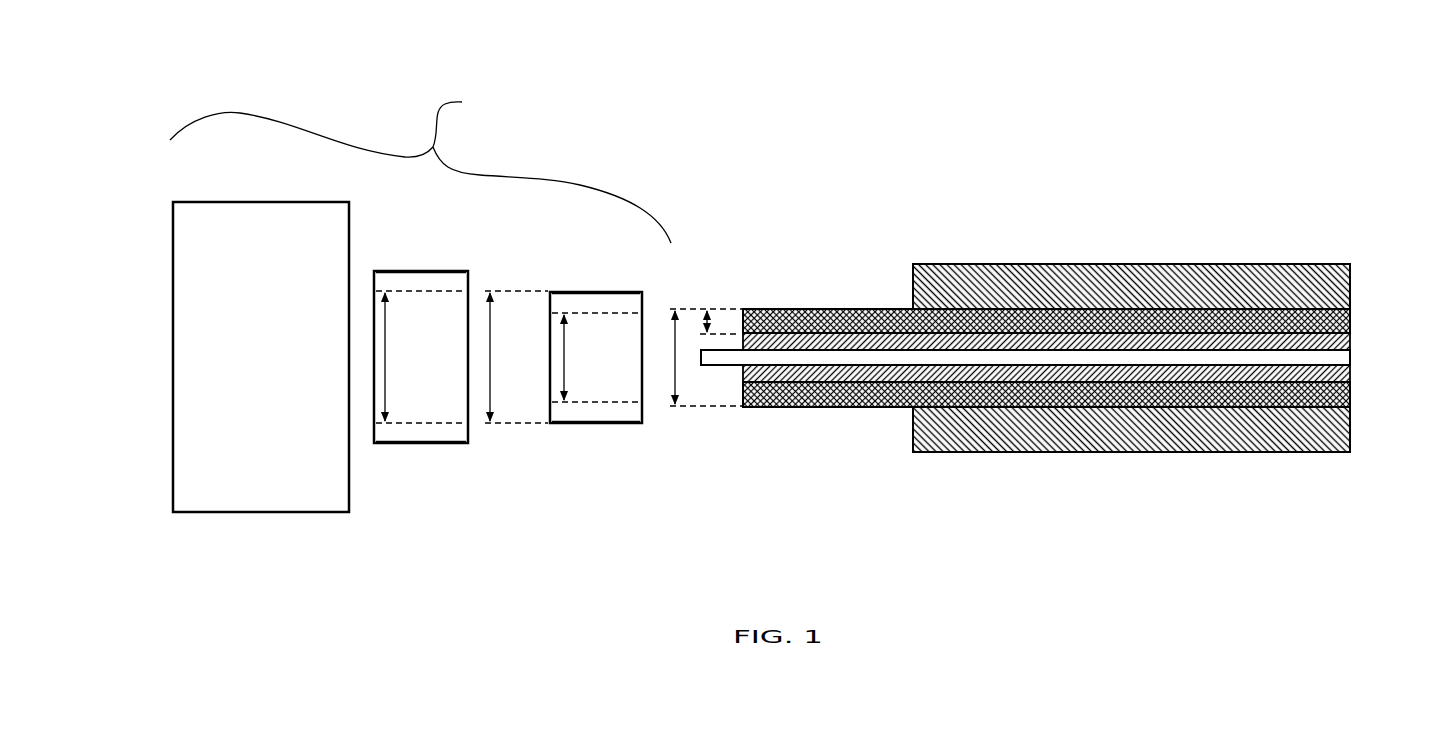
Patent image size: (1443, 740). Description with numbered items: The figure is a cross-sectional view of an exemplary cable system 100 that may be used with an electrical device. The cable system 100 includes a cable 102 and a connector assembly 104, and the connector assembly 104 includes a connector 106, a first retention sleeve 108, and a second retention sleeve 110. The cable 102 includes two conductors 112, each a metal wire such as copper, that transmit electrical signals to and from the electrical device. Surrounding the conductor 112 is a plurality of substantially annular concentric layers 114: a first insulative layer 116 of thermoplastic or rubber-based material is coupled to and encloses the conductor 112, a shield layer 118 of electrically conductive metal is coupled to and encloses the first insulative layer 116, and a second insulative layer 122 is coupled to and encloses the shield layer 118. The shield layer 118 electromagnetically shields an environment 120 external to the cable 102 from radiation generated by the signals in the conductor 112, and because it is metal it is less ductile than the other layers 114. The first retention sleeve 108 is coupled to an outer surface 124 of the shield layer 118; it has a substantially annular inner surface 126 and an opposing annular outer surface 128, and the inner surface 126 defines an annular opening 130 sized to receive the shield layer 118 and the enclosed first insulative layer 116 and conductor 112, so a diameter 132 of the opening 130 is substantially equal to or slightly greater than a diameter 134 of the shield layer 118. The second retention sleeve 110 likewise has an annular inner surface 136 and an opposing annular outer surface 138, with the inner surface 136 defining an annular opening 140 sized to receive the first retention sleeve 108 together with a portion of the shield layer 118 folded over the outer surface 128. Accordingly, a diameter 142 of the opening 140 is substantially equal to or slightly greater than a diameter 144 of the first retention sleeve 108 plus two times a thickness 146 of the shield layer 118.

The cable system 100 is at (724, 75).
The cable 102 is at (1090, 211).
The connector assembly 104 is at (420, 168).
The connector 106 is at (262, 202).
The first retention sleeve 108 is at (568, 292).
The second retention sleeve 110 is at (395, 269).
The conductor 112 is at (732, 368).
The concentric layers 114 is at (886, 466).
The first insulative layer 116 is at (1352, 340).
The shield layer 118 is at (1352, 322).
The environment 120 is at (852, 151).
The second insulative layer 122 is at (1352, 290).
The outer surface 124 is at (820, 309).
The inner surface 126 is at (572, 315).
The outer surface 128 is at (615, 292).
The opening 130 is at (636, 364).
The diameter 132 is at (550, 374).
The diameter 134 is at (672, 388).
The inner surface 136 is at (398, 293).
The outer surface 138 is at (440, 270).
The opening 140 is at (462, 364).
The diameter 142 is at (386, 342).
The diameter 144 is at (491, 346).
The thickness 146 is at (712, 322).